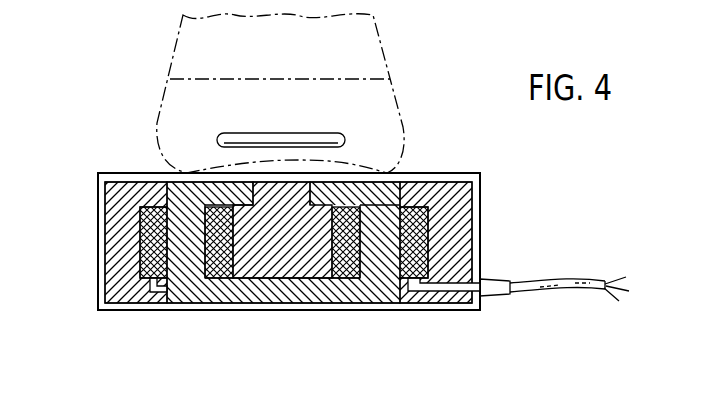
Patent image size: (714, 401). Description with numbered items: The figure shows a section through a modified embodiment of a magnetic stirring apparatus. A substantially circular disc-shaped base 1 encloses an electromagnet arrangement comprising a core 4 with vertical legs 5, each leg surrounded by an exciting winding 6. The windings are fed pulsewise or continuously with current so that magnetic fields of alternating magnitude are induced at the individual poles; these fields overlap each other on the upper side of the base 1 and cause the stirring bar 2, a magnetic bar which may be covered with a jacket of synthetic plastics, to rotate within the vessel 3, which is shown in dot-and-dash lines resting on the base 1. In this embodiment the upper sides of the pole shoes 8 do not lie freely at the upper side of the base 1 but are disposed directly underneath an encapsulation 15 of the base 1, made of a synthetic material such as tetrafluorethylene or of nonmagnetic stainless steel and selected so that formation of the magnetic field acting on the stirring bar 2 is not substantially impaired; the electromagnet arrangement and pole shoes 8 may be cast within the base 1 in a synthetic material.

The base 1 is at (97, 223).
The stirring bar 2 is at (222, 134).
The vessel 3 is at (403, 108).
The core 4 is at (220, 303).
The vertical legs 5 is at (378, 278).
The exciting windings 6 is at (418, 228).
The pole shoes 8 is at (372, 192).
The encapsulation 15 is at (127, 174).